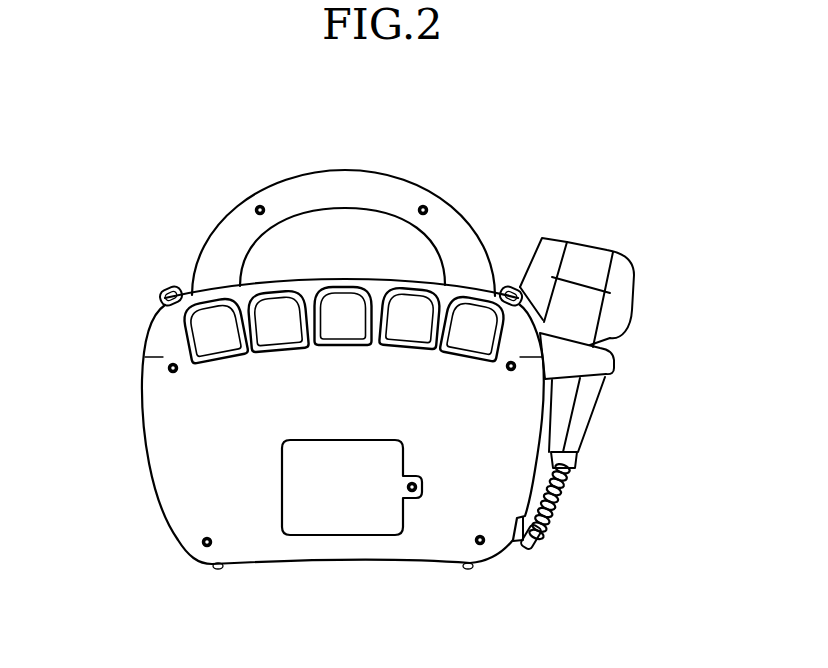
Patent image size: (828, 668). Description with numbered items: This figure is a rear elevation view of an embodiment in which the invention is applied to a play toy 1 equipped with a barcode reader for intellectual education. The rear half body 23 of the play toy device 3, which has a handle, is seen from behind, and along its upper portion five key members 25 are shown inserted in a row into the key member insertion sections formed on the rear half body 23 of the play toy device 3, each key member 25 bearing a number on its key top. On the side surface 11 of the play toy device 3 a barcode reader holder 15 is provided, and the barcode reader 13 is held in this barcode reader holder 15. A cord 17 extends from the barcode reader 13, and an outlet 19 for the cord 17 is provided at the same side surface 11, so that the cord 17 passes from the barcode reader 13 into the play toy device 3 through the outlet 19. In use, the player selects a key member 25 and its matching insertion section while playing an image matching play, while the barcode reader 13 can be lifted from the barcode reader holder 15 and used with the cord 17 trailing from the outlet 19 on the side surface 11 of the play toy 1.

The play toy 1 is at (399, 375).
The play toy device 3 is at (505, 468).
The side surface 11 is at (540, 410).
The barcode reader 13 is at (621, 308).
The barcode reader holder 15 is at (588, 364).
The cord 17 is at (547, 538).
The outlet 19 is at (520, 550).
The rear half body 23 is at (170, 442).
The key member 25 is at (262, 291).